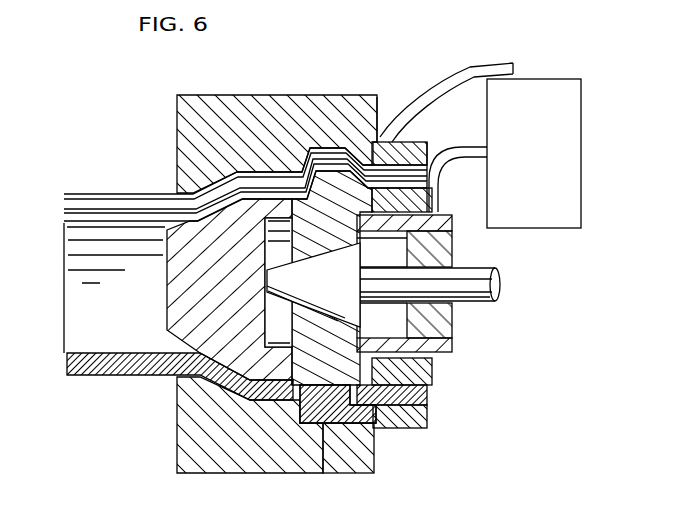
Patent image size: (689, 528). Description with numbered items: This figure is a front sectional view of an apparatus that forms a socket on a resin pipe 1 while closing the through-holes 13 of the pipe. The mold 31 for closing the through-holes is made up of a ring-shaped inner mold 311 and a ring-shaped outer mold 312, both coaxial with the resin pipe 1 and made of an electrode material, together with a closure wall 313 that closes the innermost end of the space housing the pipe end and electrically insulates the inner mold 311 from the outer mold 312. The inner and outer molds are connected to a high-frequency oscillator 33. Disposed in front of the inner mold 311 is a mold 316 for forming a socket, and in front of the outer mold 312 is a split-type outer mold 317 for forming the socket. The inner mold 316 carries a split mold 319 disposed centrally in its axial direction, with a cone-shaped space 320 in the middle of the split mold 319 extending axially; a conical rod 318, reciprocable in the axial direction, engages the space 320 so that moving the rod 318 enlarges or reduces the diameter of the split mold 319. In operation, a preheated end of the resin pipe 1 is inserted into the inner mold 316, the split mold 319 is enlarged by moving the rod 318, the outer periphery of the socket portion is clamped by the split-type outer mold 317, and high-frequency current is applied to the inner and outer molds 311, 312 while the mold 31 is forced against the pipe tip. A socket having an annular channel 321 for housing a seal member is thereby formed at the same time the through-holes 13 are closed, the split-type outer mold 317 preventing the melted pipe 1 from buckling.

The resin pipe 1 is at (98, 194).
The through-holes 13 is at (140, 193).
The split-type outer mold 317 is at (271, 93).
The mold 31 is at (418, 107).
The inner mold 311 is at (374, 96).
The outer mold 312 is at (395, 140).
The closure wall 313 is at (430, 143).
The high-frequency oscillator 33 is at (554, 88).
The conical rod 318 is at (483, 271).
The inner mold for forming a socket 316 is at (342, 320).
The cone-shaped space 320 is at (440, 323).
The annular channel 321 is at (338, 423).
The split mold 319 is at (332, 477).